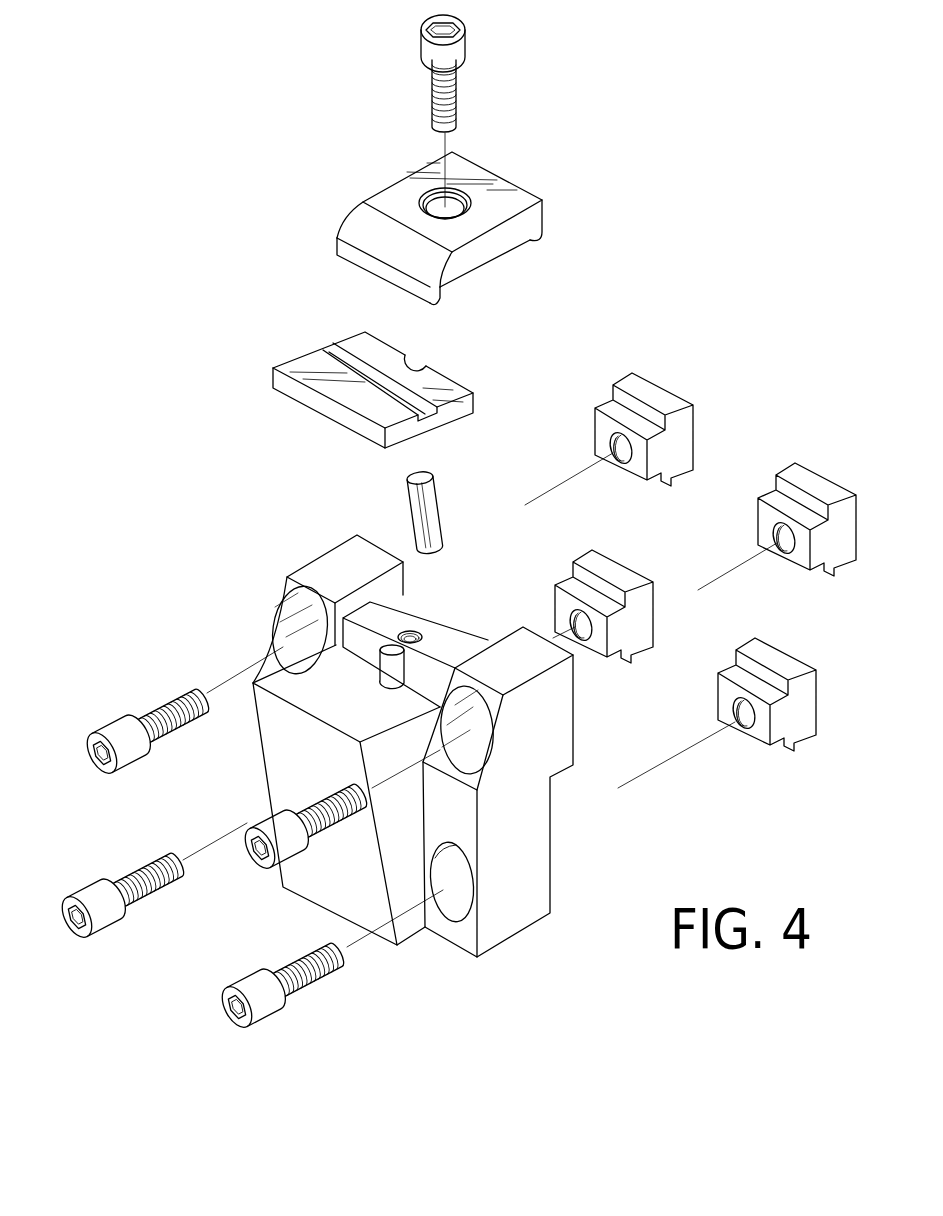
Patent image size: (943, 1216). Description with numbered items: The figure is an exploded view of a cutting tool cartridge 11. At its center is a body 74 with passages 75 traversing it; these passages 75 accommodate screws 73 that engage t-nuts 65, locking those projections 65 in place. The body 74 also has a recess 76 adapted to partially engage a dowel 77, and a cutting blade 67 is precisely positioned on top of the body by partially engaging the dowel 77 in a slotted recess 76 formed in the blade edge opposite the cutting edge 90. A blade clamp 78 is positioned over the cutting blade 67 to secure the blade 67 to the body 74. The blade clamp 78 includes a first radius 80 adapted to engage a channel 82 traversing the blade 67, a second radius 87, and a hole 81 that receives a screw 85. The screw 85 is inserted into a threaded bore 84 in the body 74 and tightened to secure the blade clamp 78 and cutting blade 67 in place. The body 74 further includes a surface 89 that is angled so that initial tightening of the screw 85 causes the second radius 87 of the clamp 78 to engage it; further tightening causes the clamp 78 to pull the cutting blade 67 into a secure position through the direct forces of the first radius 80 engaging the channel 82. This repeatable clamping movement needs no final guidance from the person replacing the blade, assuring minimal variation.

The cutting tool cartridge 11 is at (442, 789).
The t-nut 65 is at (662, 383).
The cutting blade 67 is at (360, 396).
The screw 73 is at (113, 729).
The body 74 is at (553, 817).
The passage 75 is at (475, 740).
The recess 76 is at (417, 362).
The dowel 77 is at (435, 500).
The blade clamp 78 is at (428, 222).
The first radius 80 is at (440, 297).
The hole 81 is at (447, 207).
The channel 82 is at (440, 412).
The threaded bore 84 is at (413, 630).
The screw 85 is at (457, 92).
The second radius 87 is at (541, 236).
The surface 89 is at (432, 627).
The cutting edge 90 is at (287, 388).